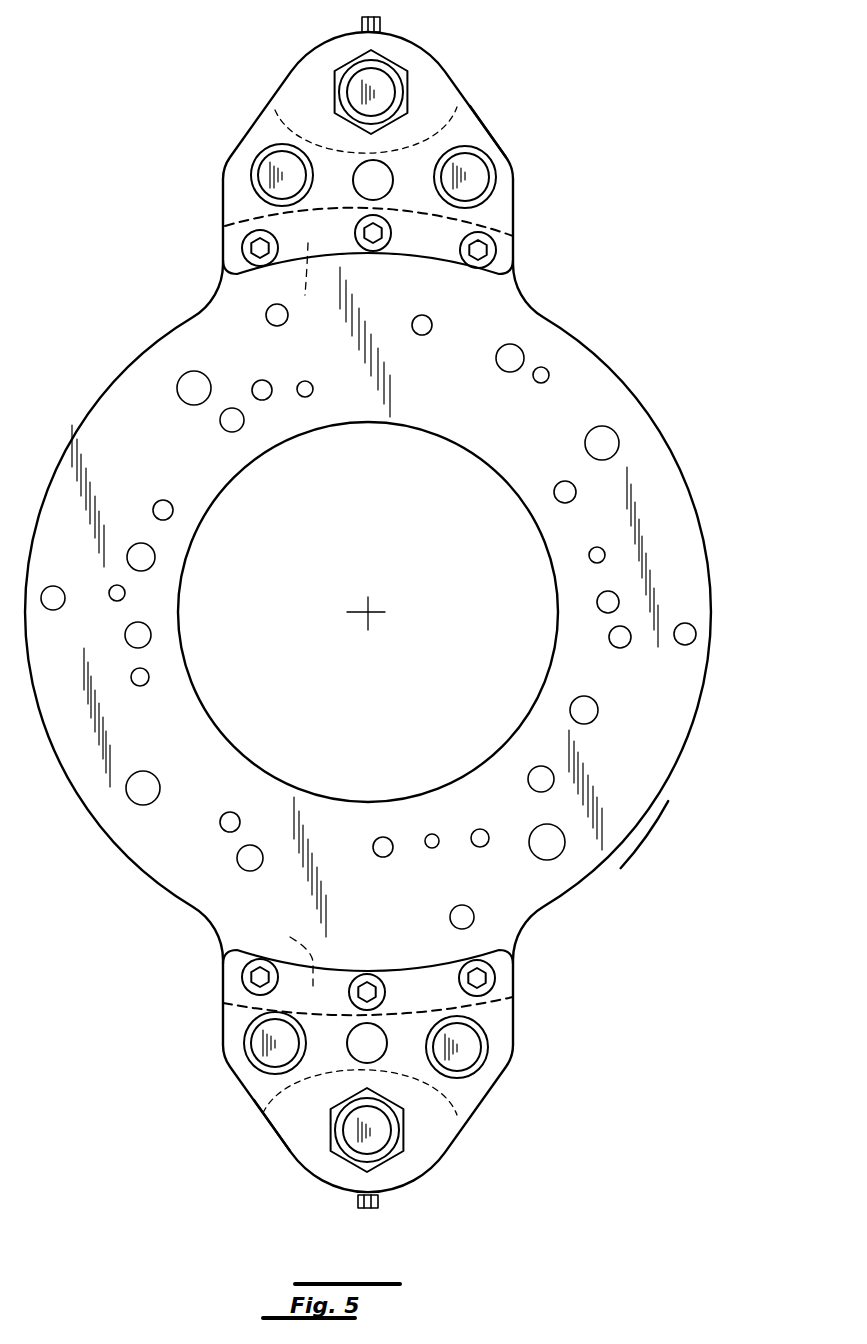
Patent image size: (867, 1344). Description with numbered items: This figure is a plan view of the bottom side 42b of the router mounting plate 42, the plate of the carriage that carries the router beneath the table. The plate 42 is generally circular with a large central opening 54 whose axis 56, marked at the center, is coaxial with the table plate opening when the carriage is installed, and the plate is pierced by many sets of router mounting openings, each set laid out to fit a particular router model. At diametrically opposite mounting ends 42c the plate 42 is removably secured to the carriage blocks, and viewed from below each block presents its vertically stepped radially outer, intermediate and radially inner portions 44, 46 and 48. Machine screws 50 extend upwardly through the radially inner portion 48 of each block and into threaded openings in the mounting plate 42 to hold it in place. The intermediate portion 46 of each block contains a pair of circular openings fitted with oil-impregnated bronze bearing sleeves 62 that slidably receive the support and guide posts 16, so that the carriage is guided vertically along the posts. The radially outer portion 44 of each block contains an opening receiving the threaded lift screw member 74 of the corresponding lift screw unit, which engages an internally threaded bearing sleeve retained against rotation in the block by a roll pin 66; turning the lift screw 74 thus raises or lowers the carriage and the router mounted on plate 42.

The support and guide post 16 is at (260, 167).
The router mounting plate 42 is at (680, 441).
The bottom side of router mounting plate 42b is at (673, 767).
The mounting end of router mounting plate 42c is at (262, 222).
The radially outer portion of carriage block 44 is at (308, 90).
The intermediate portion of carriage block 46 is at (490, 120).
The radially inner portion of carriage block 48 is at (297, 615).
The machine screw 50 is at (238, 248).
The opening of router mounting plate 54 is at (525, 508).
The axis of mounting plate opening 56 is at (364, 609).
The bearing sleeve 62 is at (252, 183).
The roll pin 66 is at (380, 23).
The lift screw member 74 is at (382, 82).